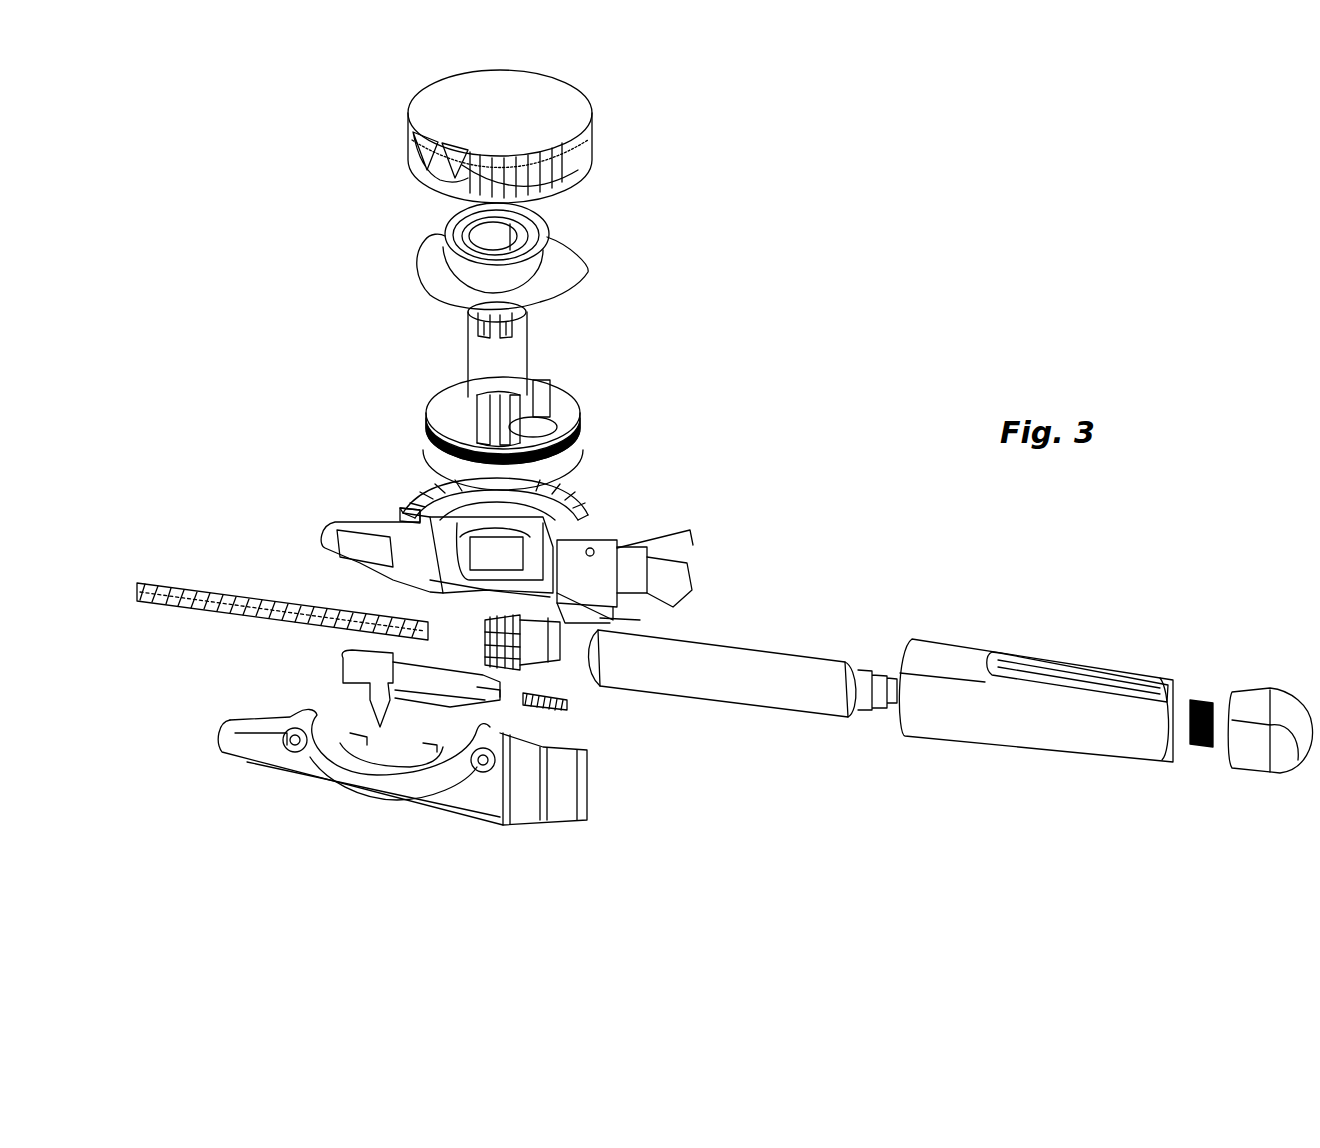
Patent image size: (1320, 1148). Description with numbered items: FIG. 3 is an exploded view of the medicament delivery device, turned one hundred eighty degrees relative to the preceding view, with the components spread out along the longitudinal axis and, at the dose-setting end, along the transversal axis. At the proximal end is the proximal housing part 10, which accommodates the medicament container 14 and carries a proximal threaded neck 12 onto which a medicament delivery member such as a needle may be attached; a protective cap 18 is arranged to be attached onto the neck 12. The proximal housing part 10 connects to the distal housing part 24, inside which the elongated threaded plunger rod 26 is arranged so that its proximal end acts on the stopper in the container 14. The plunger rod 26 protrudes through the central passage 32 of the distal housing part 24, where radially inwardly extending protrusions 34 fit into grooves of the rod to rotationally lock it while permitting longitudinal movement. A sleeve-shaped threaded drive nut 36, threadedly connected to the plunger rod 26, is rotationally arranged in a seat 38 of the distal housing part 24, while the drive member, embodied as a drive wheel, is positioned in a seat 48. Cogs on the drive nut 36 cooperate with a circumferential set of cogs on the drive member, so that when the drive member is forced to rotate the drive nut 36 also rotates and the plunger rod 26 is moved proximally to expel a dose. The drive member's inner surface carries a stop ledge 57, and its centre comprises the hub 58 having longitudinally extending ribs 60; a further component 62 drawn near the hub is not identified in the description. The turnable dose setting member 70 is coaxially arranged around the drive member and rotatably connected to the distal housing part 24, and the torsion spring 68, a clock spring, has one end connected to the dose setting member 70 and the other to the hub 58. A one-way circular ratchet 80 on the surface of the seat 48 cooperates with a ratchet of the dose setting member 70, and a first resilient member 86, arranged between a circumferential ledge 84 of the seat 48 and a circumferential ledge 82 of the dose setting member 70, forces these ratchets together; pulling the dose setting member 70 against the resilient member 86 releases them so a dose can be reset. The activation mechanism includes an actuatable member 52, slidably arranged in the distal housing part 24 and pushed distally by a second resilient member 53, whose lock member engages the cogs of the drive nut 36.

The proximal housing part 10 is at (1036, 700).
The proximal threaded neck 12 is at (1208, 702).
The medicament container 14 is at (742, 673).
The protective cap 18 is at (1242, 760).
The distal housing part 24 is at (253, 758).
The threaded plunger rod 26 is at (172, 592).
The central passage 32 is at (626, 588).
The radially inwardly extending protrusions 34 is at (617, 580).
The threaded drive nut 36 is at (543, 643).
The seat 38 is at (624, 581).
The seat 48 is at (437, 552).
The actuatable member 52 is at (421, 688).
The second resilient member 53 is at (553, 707).
The stop ledge 57 is at (543, 398).
The hub 58 is at (497, 390).
The longitudinally extending ribs 60 is at (520, 425).
The shaft 62 is at (470, 352).
The torsion spring 68 is at (462, 263).
The turnable dose setting member 70 is at (500, 136).
The one-way circular ratchet 80 is at (567, 515).
The circumferential ledge 82 is at (530, 193).
The circumferential ledge 84 is at (425, 503).
The first resilient member 86 is at (577, 293).